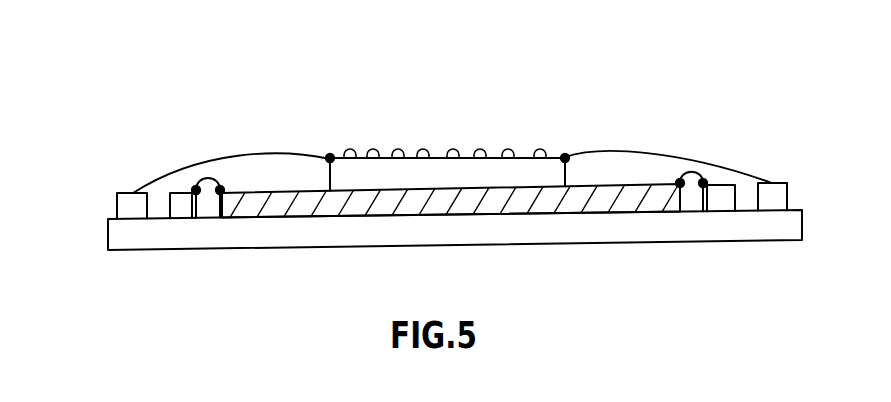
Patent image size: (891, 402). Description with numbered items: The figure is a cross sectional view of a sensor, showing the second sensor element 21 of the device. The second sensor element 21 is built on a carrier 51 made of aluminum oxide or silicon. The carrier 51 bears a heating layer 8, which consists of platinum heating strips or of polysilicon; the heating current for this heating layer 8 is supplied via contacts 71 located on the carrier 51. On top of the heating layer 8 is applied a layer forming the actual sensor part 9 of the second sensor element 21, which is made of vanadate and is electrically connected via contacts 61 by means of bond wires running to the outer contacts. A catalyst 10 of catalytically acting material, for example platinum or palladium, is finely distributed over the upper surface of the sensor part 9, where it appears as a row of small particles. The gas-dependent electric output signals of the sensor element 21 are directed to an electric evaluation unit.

The heating layer 8 is at (294, 204).
The sensor part 9 is at (546, 167).
The catalyst 10 is at (506, 151).
The second sensor element 21 is at (665, 120).
The carrier 51 is at (785, 230).
The contacts 61 is at (127, 210).
The contacts 71 is at (178, 208).